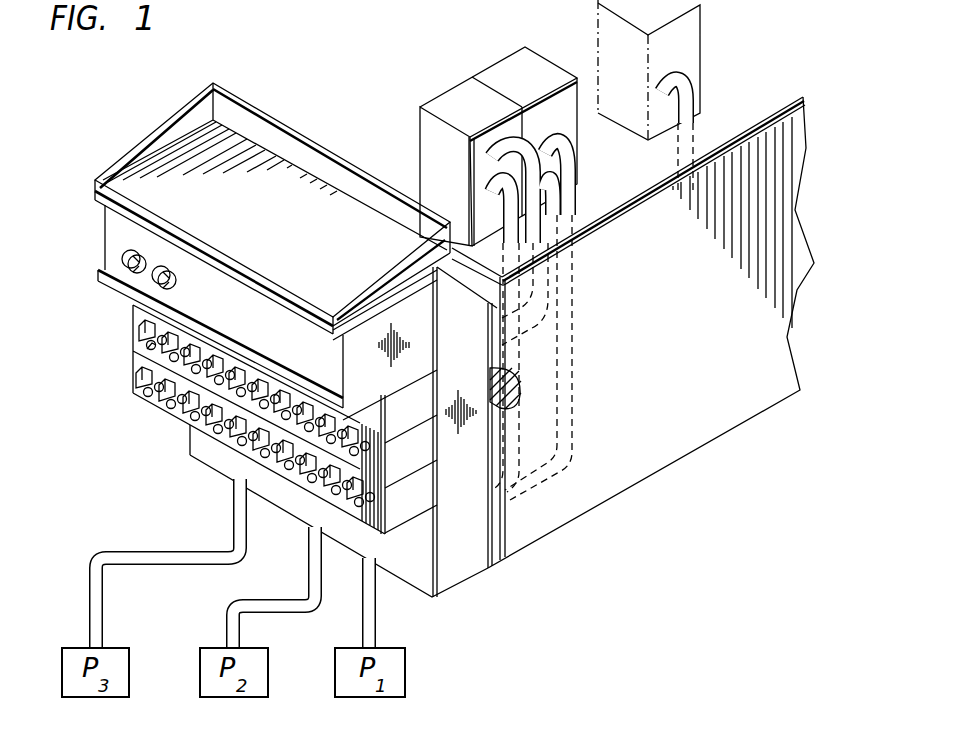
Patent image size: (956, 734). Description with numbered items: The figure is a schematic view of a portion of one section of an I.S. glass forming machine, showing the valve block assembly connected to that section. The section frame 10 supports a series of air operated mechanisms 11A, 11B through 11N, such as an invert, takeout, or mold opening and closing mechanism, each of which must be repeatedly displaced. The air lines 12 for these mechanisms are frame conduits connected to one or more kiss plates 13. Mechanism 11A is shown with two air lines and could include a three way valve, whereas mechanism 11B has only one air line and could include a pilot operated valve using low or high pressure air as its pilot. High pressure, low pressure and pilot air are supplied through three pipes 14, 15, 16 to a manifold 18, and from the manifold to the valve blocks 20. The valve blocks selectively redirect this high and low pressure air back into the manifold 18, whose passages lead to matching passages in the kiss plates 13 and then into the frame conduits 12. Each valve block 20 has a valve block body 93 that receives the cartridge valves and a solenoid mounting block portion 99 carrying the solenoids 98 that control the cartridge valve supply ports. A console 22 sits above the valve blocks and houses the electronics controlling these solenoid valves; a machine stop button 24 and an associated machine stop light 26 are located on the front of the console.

The section frame 10 is at (755, 401).
The air operated mechanism 11A is at (455, 177).
The air operated mechanism 11B is at (565, 141).
The air operated mechanism 11N is at (691, 67).
The air lines 12 is at (507, 297).
The kiss plate 13 is at (500, 488).
The high pressure pipe 14 is at (360, 615).
The low pressure pipe 15 is at (270, 601).
The pilot air pipe 16 is at (167, 553).
The manifold 18 is at (457, 573).
The valve block 20 is at (430, 502).
The console 22 is at (288, 346).
The machine stop button 24 is at (142, 256).
The machine stop light 26 is at (174, 272).
The valve block body 93 is at (410, 512).
The solenoid 98 is at (139, 375).
The solenoid mounting block portion 99 is at (392, 520).